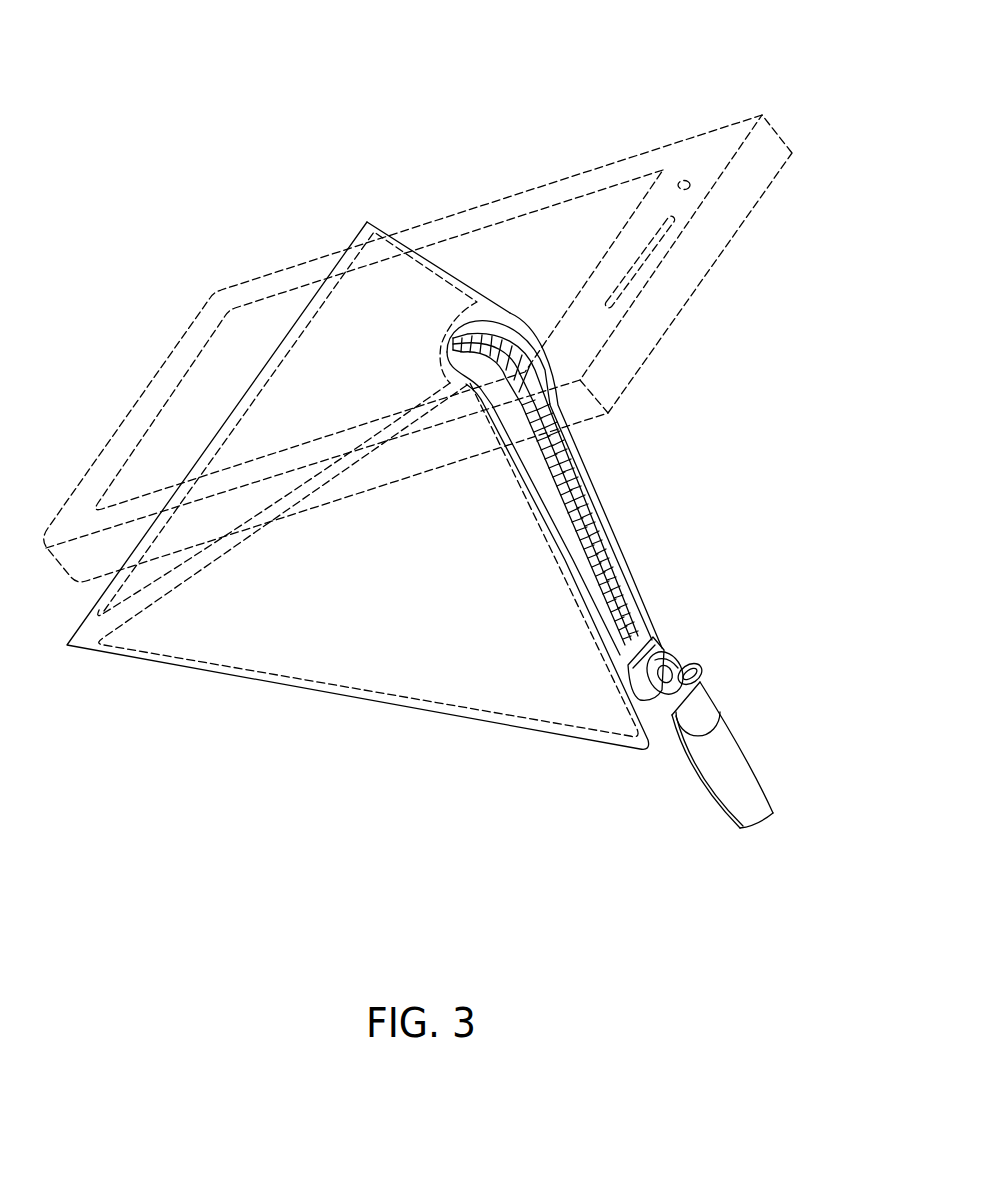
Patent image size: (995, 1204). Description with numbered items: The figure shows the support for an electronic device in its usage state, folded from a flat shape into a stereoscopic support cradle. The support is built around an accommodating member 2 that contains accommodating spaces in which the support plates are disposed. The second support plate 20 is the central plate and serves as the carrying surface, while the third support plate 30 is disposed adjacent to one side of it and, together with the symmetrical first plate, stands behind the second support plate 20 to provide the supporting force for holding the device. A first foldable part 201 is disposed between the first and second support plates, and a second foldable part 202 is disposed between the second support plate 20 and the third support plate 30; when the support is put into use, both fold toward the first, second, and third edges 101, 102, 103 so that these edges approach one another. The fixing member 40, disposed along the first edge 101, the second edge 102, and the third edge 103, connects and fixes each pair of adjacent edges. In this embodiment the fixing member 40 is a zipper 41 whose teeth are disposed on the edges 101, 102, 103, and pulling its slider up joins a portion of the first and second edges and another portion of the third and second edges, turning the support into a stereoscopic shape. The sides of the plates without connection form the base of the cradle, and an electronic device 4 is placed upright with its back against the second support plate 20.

The accommodating member 2 is at (647, 467).
The electronic device 4 is at (710, 147).
The second support plate 20 is at (340, 394).
The third support plate 30 is at (443, 574).
The fixing member 40 is at (715, 678).
The zipper 41 is at (660, 660).
The first edge 101 is at (627, 560).
The second edge 102 is at (448, 338).
The third edge 103 is at (583, 597).
The first foldable part 201 is at (455, 273).
The second foldable part 202 is at (166, 584).